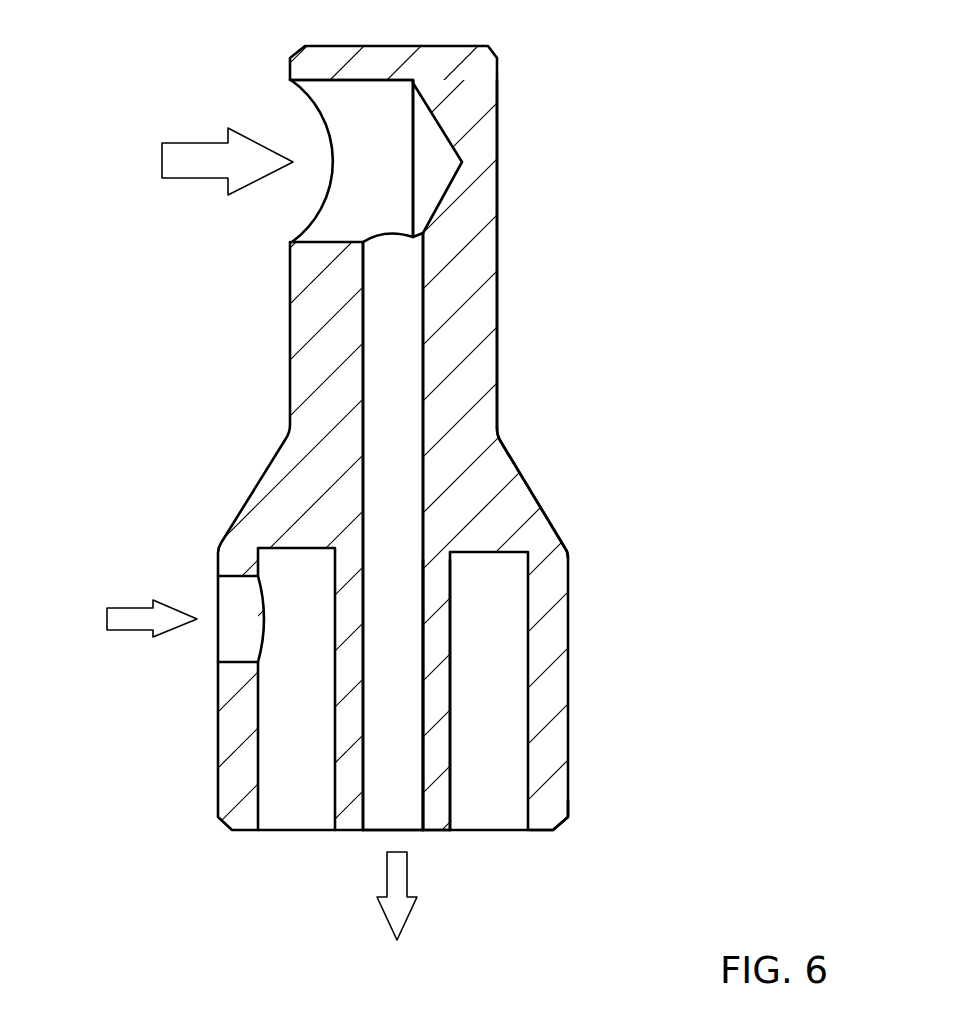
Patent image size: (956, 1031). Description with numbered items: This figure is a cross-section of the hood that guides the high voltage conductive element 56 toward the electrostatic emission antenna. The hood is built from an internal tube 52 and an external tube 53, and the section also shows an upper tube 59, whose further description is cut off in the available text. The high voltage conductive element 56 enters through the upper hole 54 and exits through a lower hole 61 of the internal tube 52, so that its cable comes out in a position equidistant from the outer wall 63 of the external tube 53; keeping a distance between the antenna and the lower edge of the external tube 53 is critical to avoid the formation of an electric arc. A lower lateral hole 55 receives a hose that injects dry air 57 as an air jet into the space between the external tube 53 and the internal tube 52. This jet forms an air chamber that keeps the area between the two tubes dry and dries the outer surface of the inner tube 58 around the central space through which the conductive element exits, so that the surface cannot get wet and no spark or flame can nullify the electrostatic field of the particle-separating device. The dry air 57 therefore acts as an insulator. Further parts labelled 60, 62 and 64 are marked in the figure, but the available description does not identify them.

The internal tube 52 is at (440, 832).
The external tube 53 is at (563, 825).
The upper hole 54 is at (340, 107).
The lower lateral hole 55 is at (240, 628).
The high voltage conductive element 56 is at (185, 161).
The dry air 57 is at (119, 618).
The inner tube 58 is at (332, 807).
The upper tube 59 is at (478, 260).
The sloped wall section 60 is at (492, 468).
The lower hole 61 is at (394, 924).
The inner wall 62 is at (438, 697).
The outer wall 63 is at (542, 640).
The left recess 64 is at (293, 801).